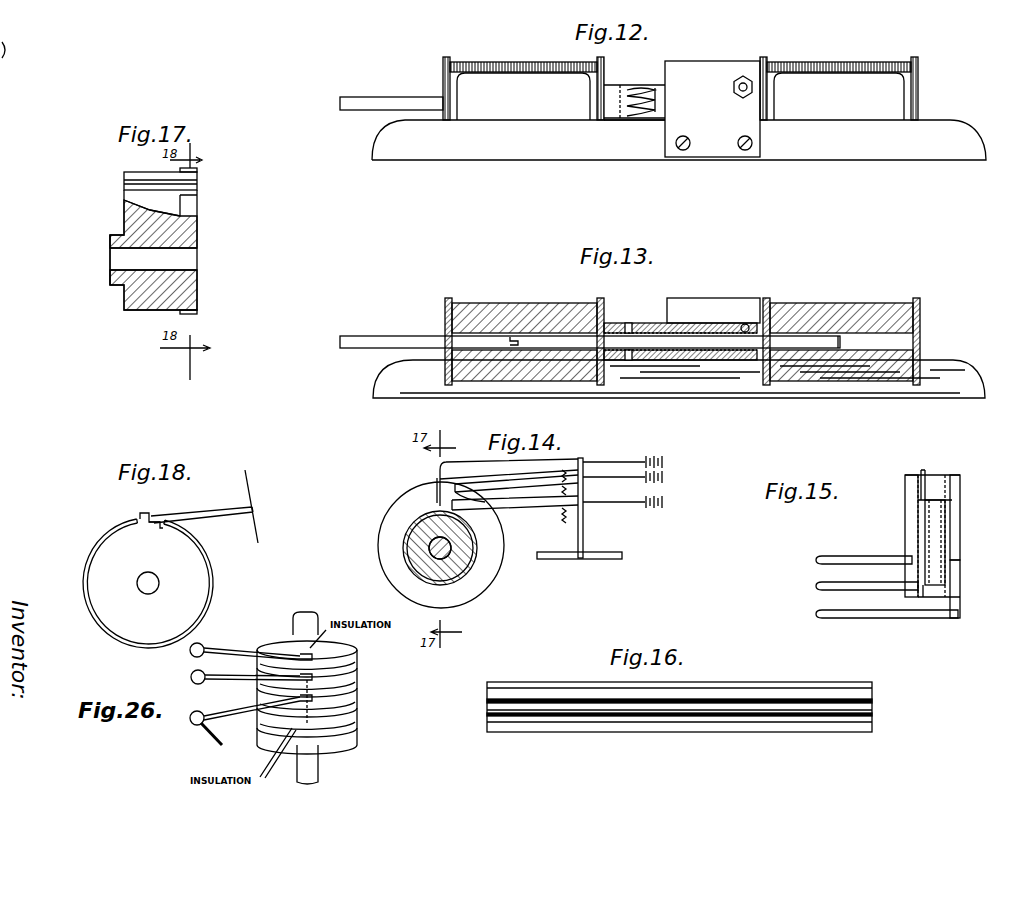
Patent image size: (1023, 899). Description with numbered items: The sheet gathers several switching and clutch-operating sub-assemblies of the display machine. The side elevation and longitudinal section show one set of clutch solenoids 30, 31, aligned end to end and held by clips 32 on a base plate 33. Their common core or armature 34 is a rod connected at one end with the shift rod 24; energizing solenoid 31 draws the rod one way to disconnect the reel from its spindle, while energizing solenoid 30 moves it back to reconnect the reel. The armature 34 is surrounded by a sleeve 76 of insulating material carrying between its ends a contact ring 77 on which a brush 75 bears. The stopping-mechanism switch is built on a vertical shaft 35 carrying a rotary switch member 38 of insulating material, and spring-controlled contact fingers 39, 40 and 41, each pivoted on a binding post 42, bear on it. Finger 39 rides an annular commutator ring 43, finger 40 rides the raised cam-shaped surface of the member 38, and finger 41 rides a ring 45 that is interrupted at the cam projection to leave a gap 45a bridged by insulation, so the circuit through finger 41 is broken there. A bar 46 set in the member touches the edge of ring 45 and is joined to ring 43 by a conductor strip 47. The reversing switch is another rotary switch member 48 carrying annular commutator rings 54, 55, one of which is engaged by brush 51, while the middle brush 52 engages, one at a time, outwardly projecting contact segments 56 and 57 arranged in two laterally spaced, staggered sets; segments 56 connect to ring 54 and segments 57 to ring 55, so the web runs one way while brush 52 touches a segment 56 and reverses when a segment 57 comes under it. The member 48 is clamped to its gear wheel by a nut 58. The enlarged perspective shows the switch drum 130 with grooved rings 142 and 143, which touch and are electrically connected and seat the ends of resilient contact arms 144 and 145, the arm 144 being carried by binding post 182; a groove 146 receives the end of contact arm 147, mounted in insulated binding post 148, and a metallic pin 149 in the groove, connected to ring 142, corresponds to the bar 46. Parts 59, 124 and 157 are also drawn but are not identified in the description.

In FIG. 12, the shift rod 24 is at (384, 99).
In FIG. 13, the shift rod 24 is at (390, 339).
In FIG. 12, the solenoid 30 is at (513, 68).
In FIG. 13, the solenoid 30 is at (517, 305).
In FIG. 12, the solenoid 31 is at (797, 67).
In FIG. 13, the solenoid 31 is at (841, 329).
In FIG. 12, the clips 32 is at (517, 107).
In FIG. 12, the base plate 33 is at (813, 147).
In FIG. 13, the base plate 33 is at (985, 360).
In FIG. 13, the core or armature 34 is at (603, 337).
In FIG. 14, the vertical shaft 35 is at (432, 560).
In FIG. 17, the rotary switch member 38 is at (197, 236).
In FIG. 18, the rotary switch member 38 is at (187, 590).
In FIG. 14, the rotary switch member 38 is at (478, 578).
In FIG. 14, the contact finger 39 is at (527, 506).
In FIG. 14, the contact finger 40 is at (578, 462).
In FIG. 18, the contact finger 41 is at (222, 515).
In FIG. 14, the contact finger 41 is at (540, 480).
In FIG. 14, the binding post 42 is at (583, 537).
In FIG. 17, the annular commutator ring 43 is at (119, 240).
In FIG. 14, the annular commutator ring 43 is at (403, 550).
In FIG. 17, the ring 45 is at (193, 167).
In FIG. 18, the ring 45 is at (87, 553).
In FIG. 14, the ring 45 is at (385, 521).
In FIG. 17, the gap 45a is at (193, 195).
In FIG. 18, the gap 45a is at (158, 516).
In FIG. 17, the bar 46 is at (200, 181).
In FIG. 18, the bar 46 is at (151, 516).
In FIG. 15, the bar 46 is at (962, 553).
In FIG. 17, the conductor strip 47 is at (122, 199).
In FIG. 16, the rotary switch member 48 is at (795, 682).
In FIG. 15, the contact finger 51 is at (912, 527).
In FIG. 15, the middle brush 52 is at (930, 527).
In FIG. 15, the annular commutator ring 54 is at (918, 478).
In FIG. 16, the annular commutator ring 54 is at (742, 696).
In FIG. 15, the annular commutator ring 55 is at (952, 492).
In FIG. 16, the annular commutator ring 55 is at (822, 722).
In FIG. 15, the contact segments 56 is at (923, 468).
In FIG. 16, the contact segments 56 is at (632, 699).
In FIG. 15, the contact segments 57 is at (946, 480).
In FIG. 16, the contact segments 57 is at (562, 716).
In FIG. 16, the nut 58 is at (843, 697).
In FIG. 15, the lead 59 is at (962, 600).
In FIG. 12, the brush 75 is at (645, 90).
In FIG. 13, the brush 75 is at (738, 322).
In FIG. 12, the sleeve 76 is at (611, 94).
In FIG. 13, the sleeve 76 is at (660, 350).
In FIG. 12, the contact ring 77 is at (622, 118).
In FIG. 13, the contact ring 77 is at (625, 360).
In FIG. 26, the shaft 124 is at (322, 770).
In FIG. 26, the switch drum 130 is at (330, 752).
In FIG. 26, the grooved ring 142 is at (355, 695).
In FIG. 26, the grooved ring 143 is at (360, 673).
In FIG. 26, the resilient contact arm 144 is at (242, 668).
In FIG. 26, the resilient contact arm 145 is at (227, 634).
In FIG. 26, the groove 146 is at (355, 714).
In FIG. 26, the resilient contact arm 147 is at (240, 705).
In FIG. 26, the insulated binding post 148 is at (193, 729).
In FIG. 26, the metallic pin 149 is at (350, 740).
In FIG. 26, the pin 157 is at (197, 742).
In FIG. 26, the binding post 182 is at (191, 677).